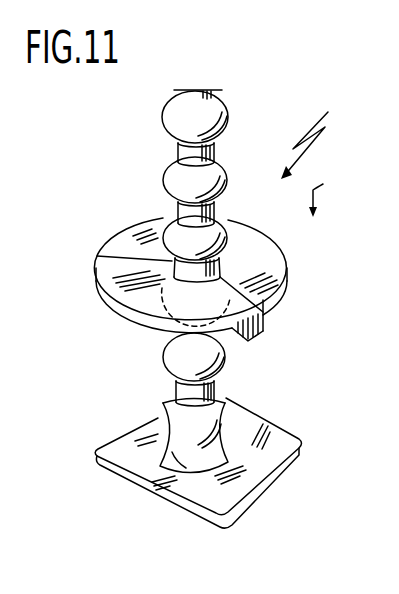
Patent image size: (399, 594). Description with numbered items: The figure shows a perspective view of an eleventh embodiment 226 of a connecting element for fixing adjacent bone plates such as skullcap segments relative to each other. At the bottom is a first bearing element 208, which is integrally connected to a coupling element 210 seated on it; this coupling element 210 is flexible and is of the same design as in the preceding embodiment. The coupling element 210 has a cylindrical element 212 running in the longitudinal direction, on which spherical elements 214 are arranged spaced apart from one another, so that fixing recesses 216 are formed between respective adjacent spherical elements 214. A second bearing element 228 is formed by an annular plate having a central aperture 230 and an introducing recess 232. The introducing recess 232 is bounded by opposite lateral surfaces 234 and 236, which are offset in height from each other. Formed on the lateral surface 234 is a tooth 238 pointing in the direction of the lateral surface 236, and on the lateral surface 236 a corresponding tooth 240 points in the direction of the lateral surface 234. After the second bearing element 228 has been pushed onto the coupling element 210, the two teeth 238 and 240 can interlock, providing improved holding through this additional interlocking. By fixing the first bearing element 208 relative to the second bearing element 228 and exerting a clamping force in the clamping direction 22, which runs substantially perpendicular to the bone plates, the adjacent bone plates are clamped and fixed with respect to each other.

The clamping direction 22 is at (330, 186).
The first bearing element 208 is at (277, 508).
The coupling element 210 is at (191, 98).
The cylindrical element 212 is at (176, 152).
The spherical elements 214 is at (166, 180).
The fixing recesses 216 is at (168, 406).
The eleventh embodiment 226 is at (319, 130).
The second bearing element 228 is at (124, 218).
The central aperture 230 is at (176, 263).
The introducing recess 232 is at (236, 352).
The lateral surface 234 is at (276, 320).
The lateral surface 236 is at (249, 352).
The tooth 238 is at (287, 327).
The tooth 240 is at (262, 350).